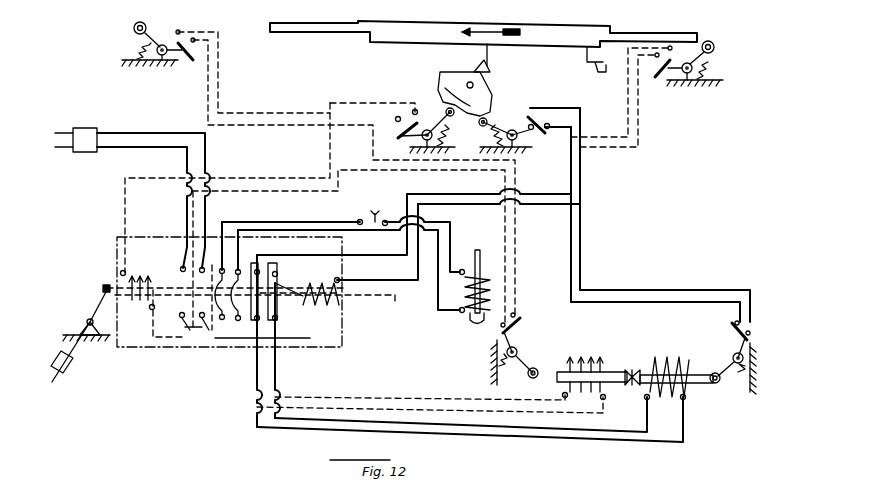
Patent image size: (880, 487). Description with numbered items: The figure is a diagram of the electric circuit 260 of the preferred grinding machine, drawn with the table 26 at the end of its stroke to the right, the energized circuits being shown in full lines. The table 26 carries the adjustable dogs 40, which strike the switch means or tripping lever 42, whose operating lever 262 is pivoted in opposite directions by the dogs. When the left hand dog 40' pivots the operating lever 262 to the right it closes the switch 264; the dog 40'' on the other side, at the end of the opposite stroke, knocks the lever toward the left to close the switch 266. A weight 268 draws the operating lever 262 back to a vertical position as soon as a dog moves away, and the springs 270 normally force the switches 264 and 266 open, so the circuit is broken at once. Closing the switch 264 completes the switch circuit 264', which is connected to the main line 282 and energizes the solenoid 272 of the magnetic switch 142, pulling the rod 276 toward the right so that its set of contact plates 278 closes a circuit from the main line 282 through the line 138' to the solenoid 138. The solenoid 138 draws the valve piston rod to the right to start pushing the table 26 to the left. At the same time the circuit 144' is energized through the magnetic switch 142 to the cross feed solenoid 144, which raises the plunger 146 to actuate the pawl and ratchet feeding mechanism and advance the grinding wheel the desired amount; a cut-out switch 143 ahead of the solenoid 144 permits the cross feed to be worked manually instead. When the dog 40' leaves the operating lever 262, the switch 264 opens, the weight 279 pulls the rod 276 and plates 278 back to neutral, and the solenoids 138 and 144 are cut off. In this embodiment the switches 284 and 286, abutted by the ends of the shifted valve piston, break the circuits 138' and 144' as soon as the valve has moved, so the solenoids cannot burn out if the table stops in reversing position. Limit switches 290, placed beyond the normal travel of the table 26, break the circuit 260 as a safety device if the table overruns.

The table 26 is at (430, 22).
The tripping lever 42 is at (403, 67).
The left hand dog 40' is at (458, 55).
The dogs 40 is at (535, 58).
The dog 40'' is at (605, 68).
The operating lever 262 is at (486, 75).
The weight 268 is at (442, 83).
The springs 270 is at (471, 143).
The switch 266 is at (393, 115).
The switch 264 is at (546, 113).
The switch circuit 264' is at (503, 215).
The electric circuit 260 is at (693, 215).
The limit switches 290 is at (197, 53).
The main line 282 is at (157, 133).
The cut-out switch 143 is at (366, 213).
The solenoid circuit 144' is at (354, 258).
The cross feed solenoid 144 is at (481, 270).
The plunger 146 is at (470, 321).
The rod 276 is at (375, 296).
The solenoid 272 is at (297, 318).
The contact plates 278 is at (277, 318).
The line 138' is at (470, 406).
The magnetic switch 142 is at (155, 348).
The weight 279 is at (80, 362).
The switch 286 is at (522, 320).
The switch 284 is at (730, 327).
The solenoid 138 is at (638, 366).